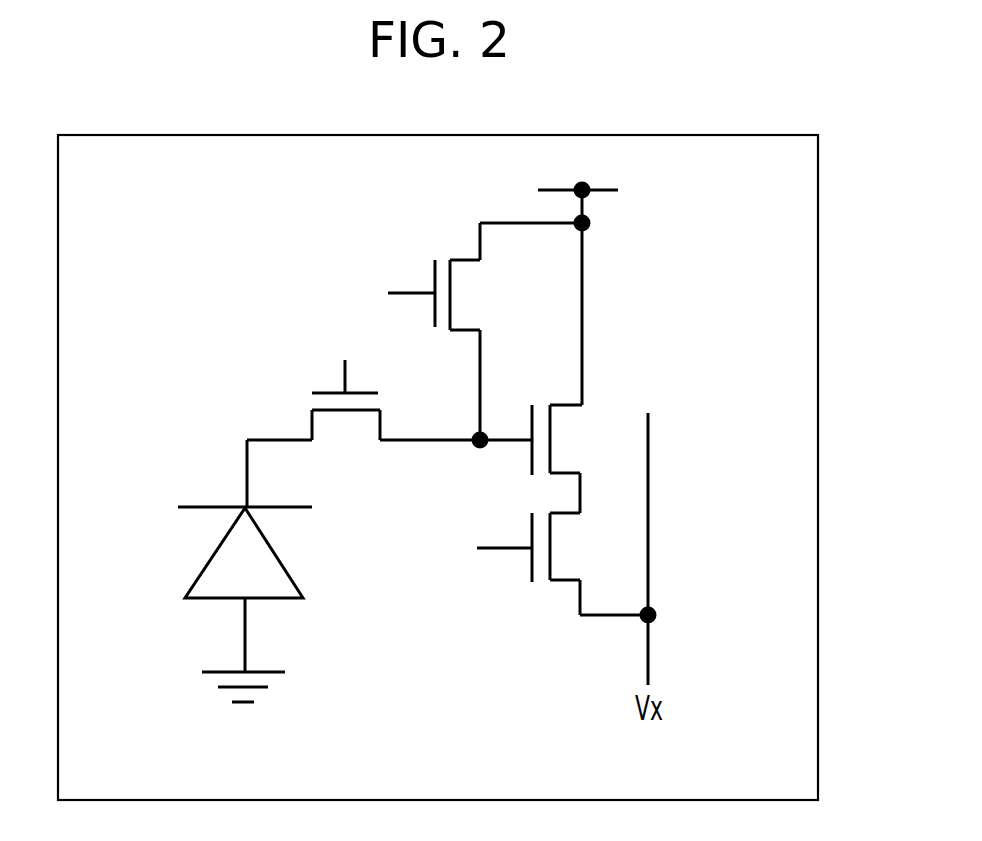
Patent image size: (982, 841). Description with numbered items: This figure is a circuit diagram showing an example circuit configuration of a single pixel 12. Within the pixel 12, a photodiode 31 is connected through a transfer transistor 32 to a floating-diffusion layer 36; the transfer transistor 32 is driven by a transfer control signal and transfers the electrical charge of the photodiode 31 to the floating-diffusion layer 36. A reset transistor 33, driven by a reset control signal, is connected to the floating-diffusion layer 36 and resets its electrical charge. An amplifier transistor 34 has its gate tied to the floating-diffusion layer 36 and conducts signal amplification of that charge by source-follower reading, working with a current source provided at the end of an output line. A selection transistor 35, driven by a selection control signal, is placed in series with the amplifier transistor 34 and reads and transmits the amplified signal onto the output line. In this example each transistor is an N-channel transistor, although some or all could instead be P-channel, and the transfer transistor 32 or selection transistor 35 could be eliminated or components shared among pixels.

The pixel 12 is at (818, 137).
The photodiode 31 is at (292, 568).
The transfer transistor 32 is at (315, 402).
The reset transistor 33 is at (473, 298).
The amplifier transistor 34 is at (570, 442).
The selection transistor 35 is at (570, 547).
The floating-diffusion layer 36 is at (473, 449).